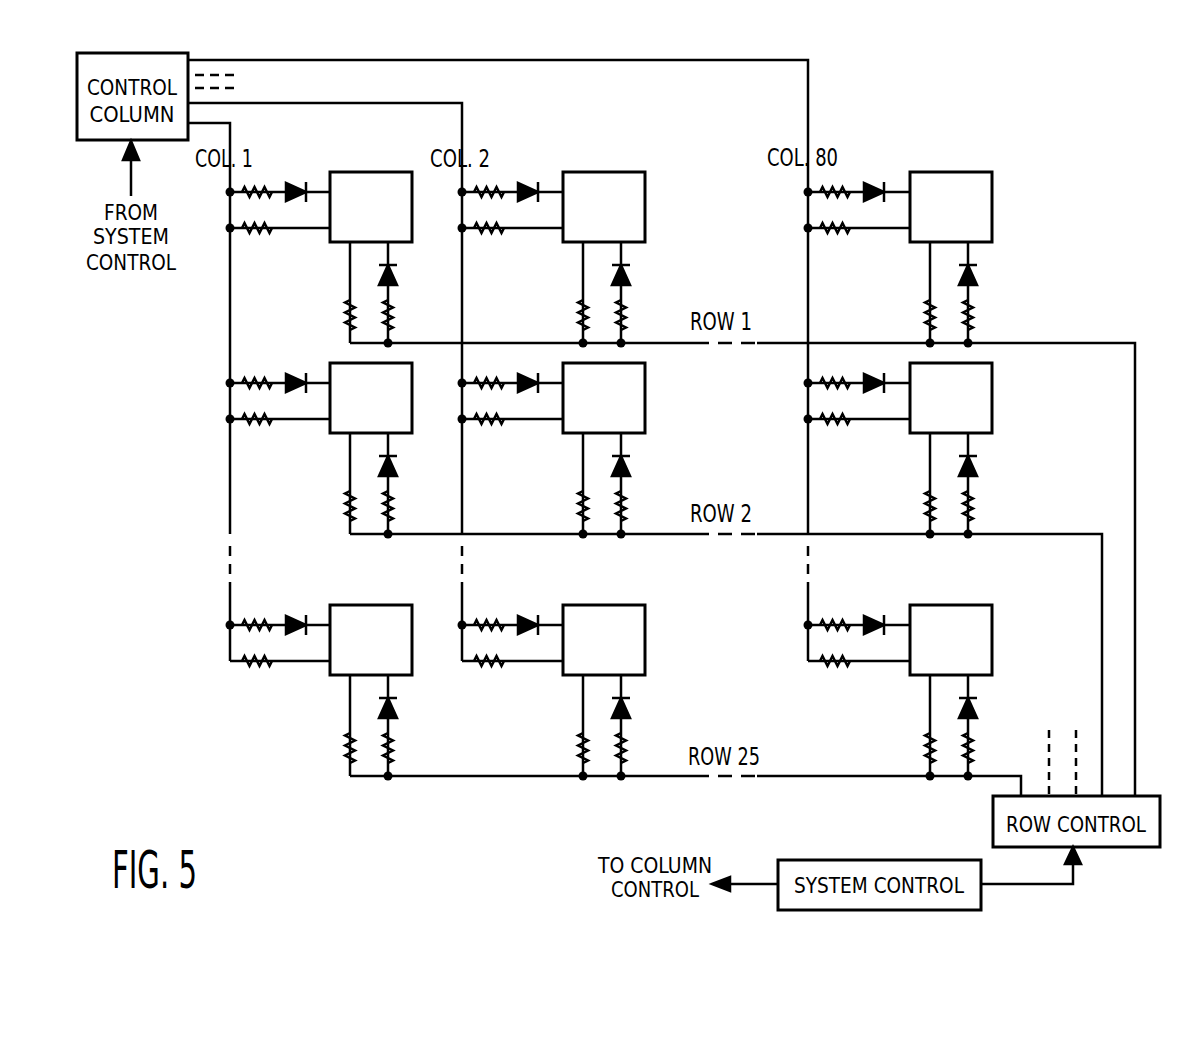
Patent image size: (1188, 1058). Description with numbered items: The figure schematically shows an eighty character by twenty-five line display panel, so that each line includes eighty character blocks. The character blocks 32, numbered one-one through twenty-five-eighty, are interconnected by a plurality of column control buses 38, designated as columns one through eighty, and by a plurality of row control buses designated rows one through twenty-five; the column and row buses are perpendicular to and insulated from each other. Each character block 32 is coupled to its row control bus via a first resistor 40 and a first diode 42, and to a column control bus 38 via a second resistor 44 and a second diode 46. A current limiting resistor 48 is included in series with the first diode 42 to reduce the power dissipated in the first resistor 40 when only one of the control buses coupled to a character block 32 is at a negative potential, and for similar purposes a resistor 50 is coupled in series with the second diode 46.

The character block 32 is at (993, 637).
The column control bus 38 is at (415, 101).
The first resistor 40 is at (923, 747).
The first diode 42 is at (978, 708).
The second resistor 44 is at (838, 665).
The second diode 46 is at (870, 615).
The current limiting resistor 48 is at (976, 748).
The resistor 50 is at (832, 620).